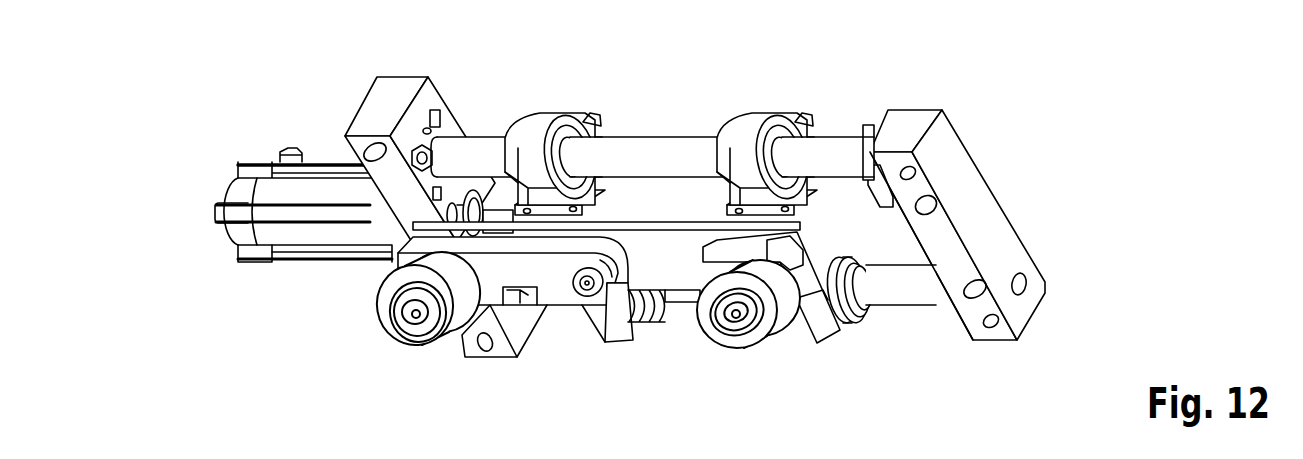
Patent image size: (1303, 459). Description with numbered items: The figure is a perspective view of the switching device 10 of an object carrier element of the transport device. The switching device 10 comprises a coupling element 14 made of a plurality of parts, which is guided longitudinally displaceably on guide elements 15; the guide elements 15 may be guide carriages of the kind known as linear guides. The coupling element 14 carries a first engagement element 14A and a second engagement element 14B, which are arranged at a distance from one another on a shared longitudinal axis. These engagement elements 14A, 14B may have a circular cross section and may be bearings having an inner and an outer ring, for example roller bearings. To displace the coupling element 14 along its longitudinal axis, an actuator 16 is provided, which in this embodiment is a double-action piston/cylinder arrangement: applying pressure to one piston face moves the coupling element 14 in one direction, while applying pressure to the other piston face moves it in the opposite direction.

The switching device 10 is at (630, 208).
The coupling element 14 is at (680, 263).
The first engagement element 14A is at (414, 316).
The second engagement element 14B is at (773, 322).
The guide elements 15 is at (832, 148).
The actuator 16 is at (288, 232).